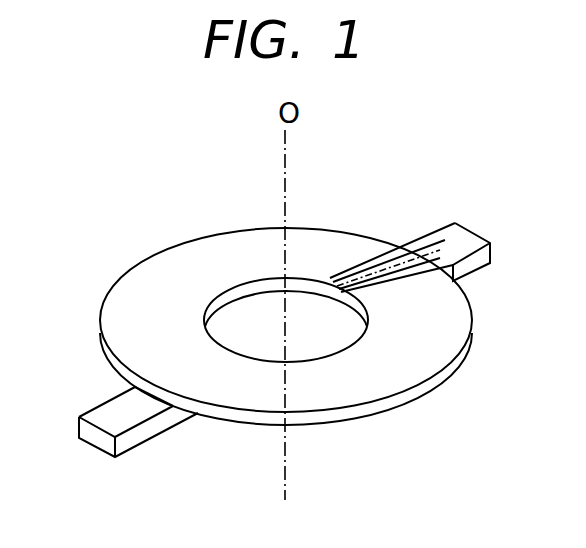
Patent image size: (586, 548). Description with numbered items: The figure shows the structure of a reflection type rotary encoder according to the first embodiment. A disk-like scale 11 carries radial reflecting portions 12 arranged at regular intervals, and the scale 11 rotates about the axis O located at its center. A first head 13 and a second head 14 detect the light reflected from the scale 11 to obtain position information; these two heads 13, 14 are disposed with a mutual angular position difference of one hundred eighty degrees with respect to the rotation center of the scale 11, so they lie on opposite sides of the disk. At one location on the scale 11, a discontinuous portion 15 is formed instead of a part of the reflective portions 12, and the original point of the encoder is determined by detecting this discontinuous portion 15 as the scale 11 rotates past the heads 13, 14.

The disk-like scale 11 is at (132, 283).
The radial reflecting portions 12 is at (405, 285).
The first head 13 is at (107, 414).
The second head 14 is at (447, 238).
The discontinuous portion 15 is at (382, 260).